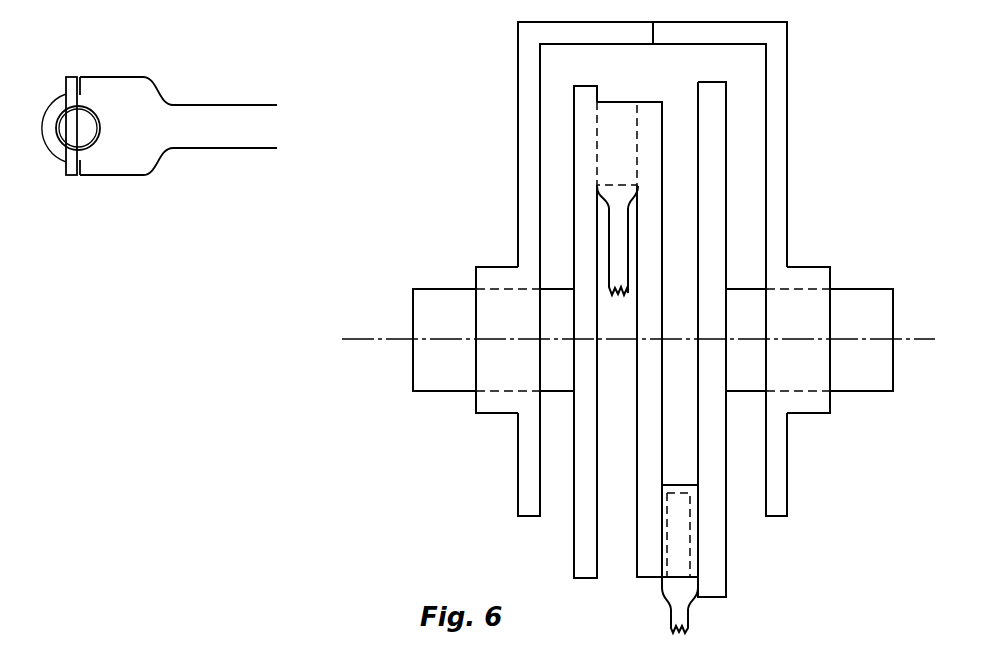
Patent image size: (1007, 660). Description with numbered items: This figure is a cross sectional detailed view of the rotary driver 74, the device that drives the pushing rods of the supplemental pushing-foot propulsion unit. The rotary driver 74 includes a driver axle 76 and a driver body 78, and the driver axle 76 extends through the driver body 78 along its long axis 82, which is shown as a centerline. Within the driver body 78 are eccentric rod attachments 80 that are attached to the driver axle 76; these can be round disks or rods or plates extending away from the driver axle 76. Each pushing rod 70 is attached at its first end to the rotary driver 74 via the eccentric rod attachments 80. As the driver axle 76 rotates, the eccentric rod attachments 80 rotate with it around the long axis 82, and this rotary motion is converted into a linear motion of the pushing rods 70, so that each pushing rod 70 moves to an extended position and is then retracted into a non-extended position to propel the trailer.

The pushing rod 70 is at (608, 253).
The rotary driver 74 is at (330, 245).
The driver axle 76 is at (413, 378).
The driver body 78 is at (788, 187).
The eccentric rod attachments 80 is at (580, 167).
The long axis 82 is at (363, 338).